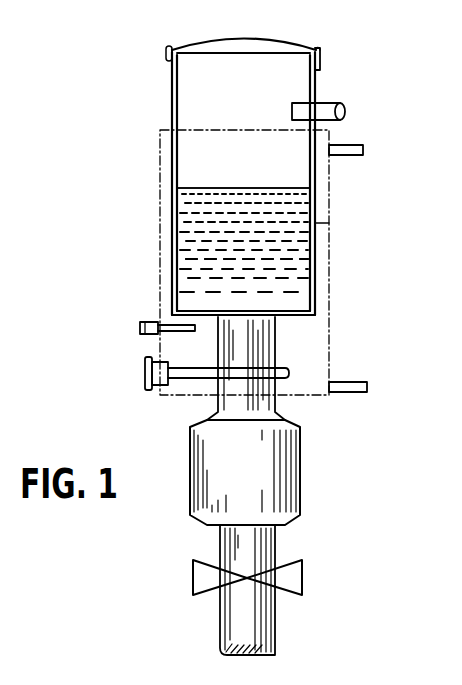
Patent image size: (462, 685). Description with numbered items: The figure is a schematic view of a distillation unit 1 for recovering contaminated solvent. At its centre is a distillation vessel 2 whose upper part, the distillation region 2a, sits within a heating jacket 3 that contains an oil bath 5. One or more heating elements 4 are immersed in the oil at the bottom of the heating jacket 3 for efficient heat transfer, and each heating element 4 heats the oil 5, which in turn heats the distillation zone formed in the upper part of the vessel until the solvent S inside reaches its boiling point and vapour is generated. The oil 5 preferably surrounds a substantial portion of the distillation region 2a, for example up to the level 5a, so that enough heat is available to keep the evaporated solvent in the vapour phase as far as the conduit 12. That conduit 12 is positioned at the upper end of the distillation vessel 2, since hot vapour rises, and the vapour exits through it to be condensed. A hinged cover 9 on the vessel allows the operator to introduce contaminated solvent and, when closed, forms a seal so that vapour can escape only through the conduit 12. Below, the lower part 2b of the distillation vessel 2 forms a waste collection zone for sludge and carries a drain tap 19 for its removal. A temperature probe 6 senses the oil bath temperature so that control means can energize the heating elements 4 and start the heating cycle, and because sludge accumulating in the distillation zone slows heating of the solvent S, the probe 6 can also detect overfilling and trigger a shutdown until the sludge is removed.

The distillation unit 1 is at (334, 215).
The distillation vessel 2 is at (172, 80).
The distillation region 2a is at (315, 173).
The lower part 2b is at (300, 465).
The heating jacket 3 is at (331, 322).
The heating element 4 is at (145, 372).
The oil bath 5 is at (320, 258).
The level 5a is at (200, 222).
The temperature probe 6 is at (137, 322).
The hinged cover 9 is at (319, 50).
The conduit 12 is at (345, 112).
The drain tap 19 is at (303, 580).
The solvent S is at (208, 259).